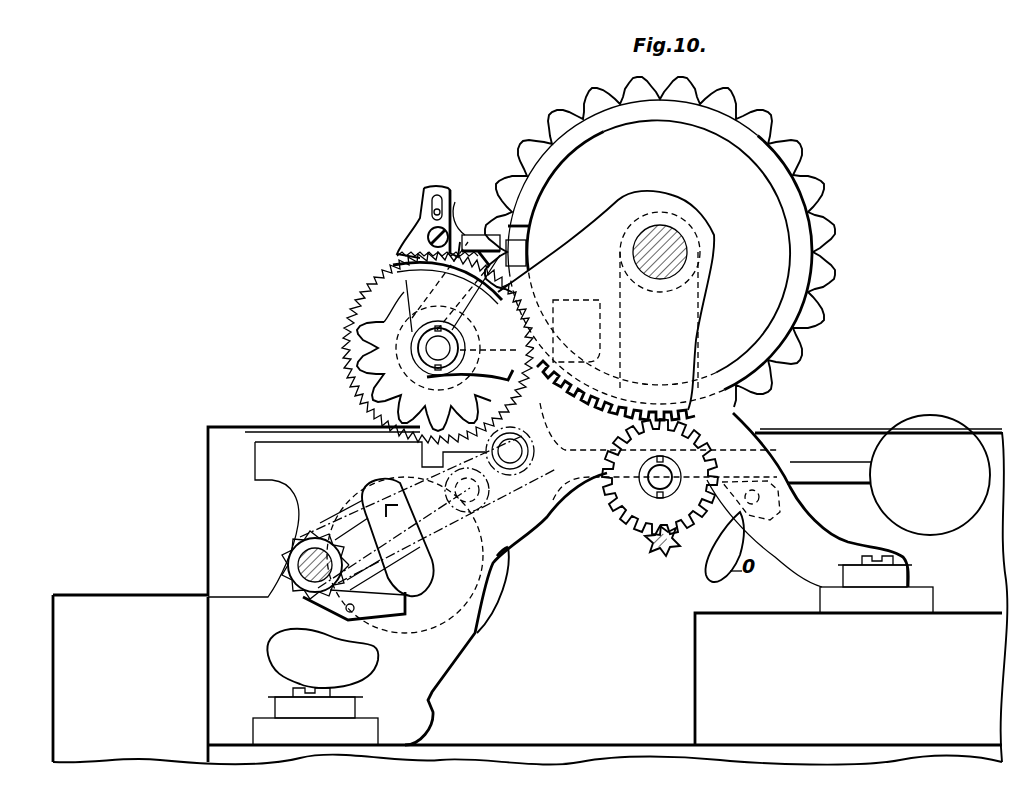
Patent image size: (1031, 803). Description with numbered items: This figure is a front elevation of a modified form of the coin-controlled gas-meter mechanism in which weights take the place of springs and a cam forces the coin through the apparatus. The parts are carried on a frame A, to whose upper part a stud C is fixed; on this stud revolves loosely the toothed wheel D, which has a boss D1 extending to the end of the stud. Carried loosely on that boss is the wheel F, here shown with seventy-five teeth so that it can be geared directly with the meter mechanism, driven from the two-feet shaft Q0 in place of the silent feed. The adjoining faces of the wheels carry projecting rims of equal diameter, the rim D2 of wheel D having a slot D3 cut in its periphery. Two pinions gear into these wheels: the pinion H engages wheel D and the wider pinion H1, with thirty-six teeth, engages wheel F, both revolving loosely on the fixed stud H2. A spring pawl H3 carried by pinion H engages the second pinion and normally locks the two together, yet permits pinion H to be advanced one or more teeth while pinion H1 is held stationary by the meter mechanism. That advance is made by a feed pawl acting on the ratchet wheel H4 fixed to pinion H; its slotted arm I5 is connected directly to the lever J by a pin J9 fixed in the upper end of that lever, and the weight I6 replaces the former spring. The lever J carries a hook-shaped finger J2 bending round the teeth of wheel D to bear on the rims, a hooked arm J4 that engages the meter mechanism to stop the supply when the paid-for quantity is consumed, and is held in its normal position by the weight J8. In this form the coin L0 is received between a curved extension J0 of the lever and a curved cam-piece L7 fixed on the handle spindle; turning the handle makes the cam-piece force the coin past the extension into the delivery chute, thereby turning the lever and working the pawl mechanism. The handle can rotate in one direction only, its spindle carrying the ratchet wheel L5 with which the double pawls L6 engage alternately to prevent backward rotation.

The frame A is at (830, 561).
The stud C is at (650, 272).
The toothed wheel D is at (606, 300).
The boss D1 is at (670, 272).
The rim or flange D2 is at (572, 150).
The slot or groove D3 is at (516, 249).
The wheel F is at (659, 322).
The pinion H is at (424, 361).
The pinion H1 is at (470, 367).
The fixed stud H2 is at (432, 350).
The spring pawl H3 is at (392, 270).
The ratchet wheel H4 is at (368, 386).
The arm I5 is at (426, 197).
The weight I6 is at (576, 331).
The curved extension J0 is at (497, 600).
The hook-shaped finger J2 is at (481, 236).
The hooked arm J4 is at (800, 468).
The weight J8 is at (930, 475).
The pin J9 is at (464, 208).
The coin L0 is at (408, 512).
The ratchet wheel L5 is at (287, 570).
The pawl L6 is at (408, 616).
The cam-piece L7 is at (354, 522).
The two-feet shaft Q0 is at (673, 544).